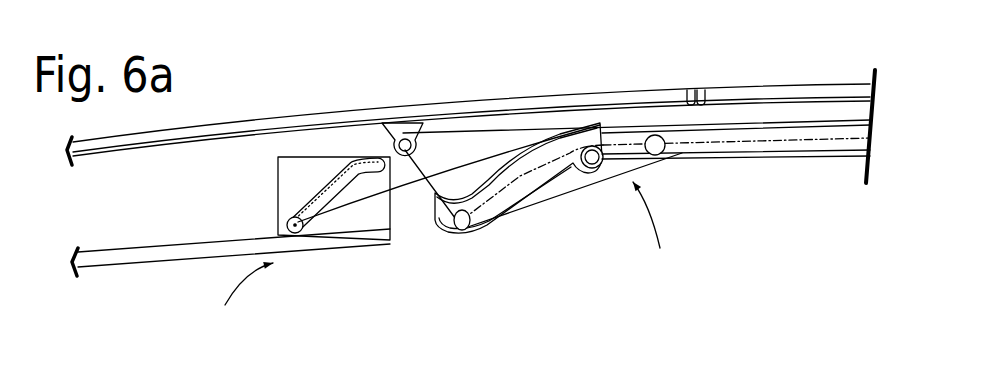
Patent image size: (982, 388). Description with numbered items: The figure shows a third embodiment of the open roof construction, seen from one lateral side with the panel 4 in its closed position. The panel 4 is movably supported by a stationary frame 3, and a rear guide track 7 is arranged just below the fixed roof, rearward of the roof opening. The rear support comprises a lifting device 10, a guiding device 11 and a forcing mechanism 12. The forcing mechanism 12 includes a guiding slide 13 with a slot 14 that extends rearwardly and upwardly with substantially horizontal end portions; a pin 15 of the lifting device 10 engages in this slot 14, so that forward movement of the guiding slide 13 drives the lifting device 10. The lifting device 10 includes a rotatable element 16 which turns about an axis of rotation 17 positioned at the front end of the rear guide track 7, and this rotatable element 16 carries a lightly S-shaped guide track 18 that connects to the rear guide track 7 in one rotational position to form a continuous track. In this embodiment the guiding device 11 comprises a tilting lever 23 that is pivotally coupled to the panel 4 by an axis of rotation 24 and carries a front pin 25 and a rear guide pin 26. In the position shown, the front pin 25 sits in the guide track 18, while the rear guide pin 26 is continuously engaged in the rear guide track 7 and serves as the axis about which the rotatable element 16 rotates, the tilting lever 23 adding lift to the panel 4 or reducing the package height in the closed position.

The frame 3 is at (183, 258).
The panel 4 is at (305, 113).
The rear guide track 7 is at (832, 140).
The lifting device 10 is at (655, 232).
The guiding device 11 is at (463, 125).
The forcing mechanism 12 is at (241, 300).
The guiding slide 13 is at (353, 192).
The slot 14 is at (377, 172).
The pin 15 is at (298, 236).
The rotatable element 16 is at (415, 208).
The axis of rotation 17 is at (593, 170).
The guide track 18 is at (532, 193).
The tilting lever 23 is at (478, 148).
The axis of rotation 24 is at (403, 140).
The front pin 25 is at (482, 233).
The rear guide pin 26 is at (665, 155).